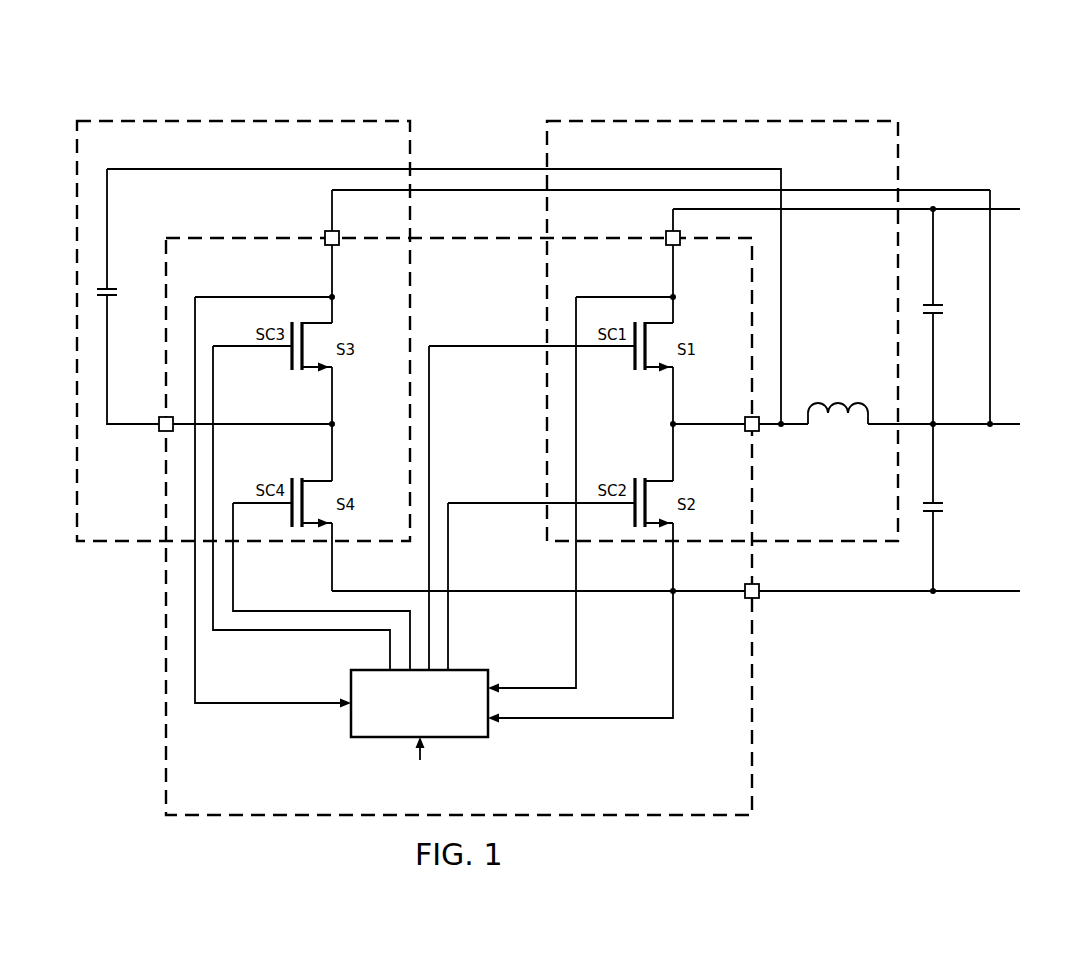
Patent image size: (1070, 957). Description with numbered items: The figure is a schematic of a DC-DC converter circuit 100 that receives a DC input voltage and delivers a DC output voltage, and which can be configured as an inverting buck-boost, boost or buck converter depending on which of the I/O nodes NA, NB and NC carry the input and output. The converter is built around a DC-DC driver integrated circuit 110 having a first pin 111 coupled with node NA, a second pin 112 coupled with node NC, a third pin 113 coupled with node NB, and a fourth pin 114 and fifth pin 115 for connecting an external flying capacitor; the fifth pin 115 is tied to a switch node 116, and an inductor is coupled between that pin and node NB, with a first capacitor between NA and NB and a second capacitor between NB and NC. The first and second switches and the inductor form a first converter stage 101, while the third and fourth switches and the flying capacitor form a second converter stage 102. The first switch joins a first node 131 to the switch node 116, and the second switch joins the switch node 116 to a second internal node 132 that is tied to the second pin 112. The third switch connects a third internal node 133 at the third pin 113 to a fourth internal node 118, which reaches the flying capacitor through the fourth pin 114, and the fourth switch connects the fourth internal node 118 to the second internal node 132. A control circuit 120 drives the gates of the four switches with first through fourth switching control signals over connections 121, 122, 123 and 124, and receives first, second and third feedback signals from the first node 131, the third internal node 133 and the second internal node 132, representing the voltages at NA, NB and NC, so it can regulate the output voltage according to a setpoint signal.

The DC-DC converter circuit 100 is at (982, 110).
The first converter stage 101 is at (734, 120).
The second converter stage 102 is at (243, 120).
The DC-DC driver integrated circuit 110 is at (275, 788).
The first pin 111 is at (680, 243).
The second pin 112 is at (760, 597).
The third pin 113 is at (332, 231).
The fourth pin 114 is at (158, 432).
The fifth pin 115 is at (760, 430).
The switch node 116 is at (672, 405).
The fourth internal node 118 is at (330, 405).
The control circuit 120 is at (373, 740).
The connection 121 is at (429, 555).
The connection 122 is at (448, 620).
The connection 123 is at (332, 631).
The connection 124 is at (303, 610).
The first node 131 is at (624, 296).
The second internal node 132 is at (673, 555).
The third internal node 133 is at (270, 296).